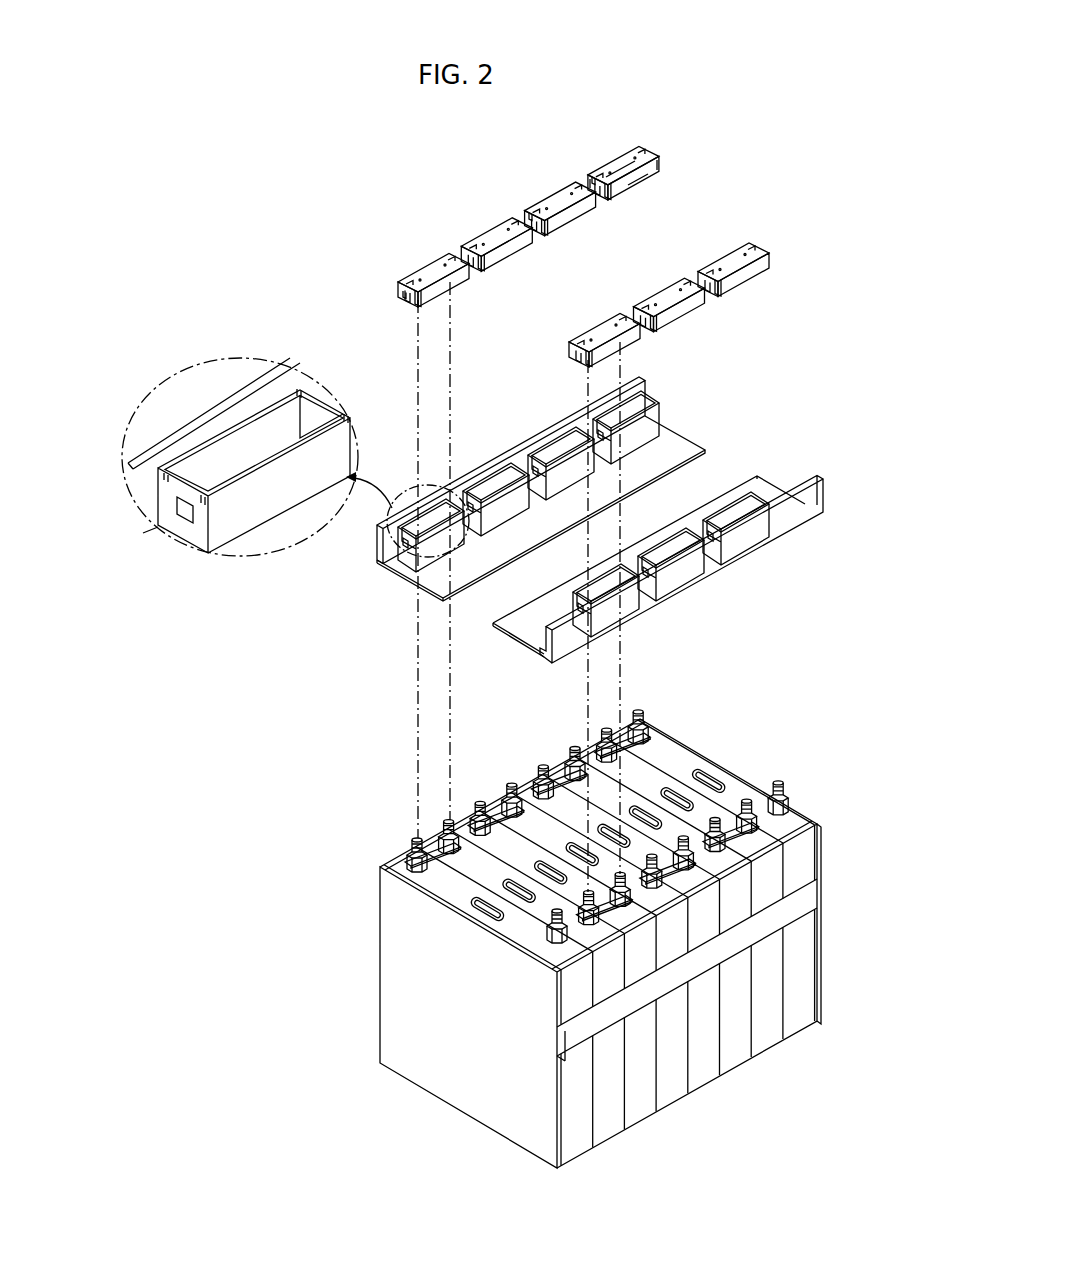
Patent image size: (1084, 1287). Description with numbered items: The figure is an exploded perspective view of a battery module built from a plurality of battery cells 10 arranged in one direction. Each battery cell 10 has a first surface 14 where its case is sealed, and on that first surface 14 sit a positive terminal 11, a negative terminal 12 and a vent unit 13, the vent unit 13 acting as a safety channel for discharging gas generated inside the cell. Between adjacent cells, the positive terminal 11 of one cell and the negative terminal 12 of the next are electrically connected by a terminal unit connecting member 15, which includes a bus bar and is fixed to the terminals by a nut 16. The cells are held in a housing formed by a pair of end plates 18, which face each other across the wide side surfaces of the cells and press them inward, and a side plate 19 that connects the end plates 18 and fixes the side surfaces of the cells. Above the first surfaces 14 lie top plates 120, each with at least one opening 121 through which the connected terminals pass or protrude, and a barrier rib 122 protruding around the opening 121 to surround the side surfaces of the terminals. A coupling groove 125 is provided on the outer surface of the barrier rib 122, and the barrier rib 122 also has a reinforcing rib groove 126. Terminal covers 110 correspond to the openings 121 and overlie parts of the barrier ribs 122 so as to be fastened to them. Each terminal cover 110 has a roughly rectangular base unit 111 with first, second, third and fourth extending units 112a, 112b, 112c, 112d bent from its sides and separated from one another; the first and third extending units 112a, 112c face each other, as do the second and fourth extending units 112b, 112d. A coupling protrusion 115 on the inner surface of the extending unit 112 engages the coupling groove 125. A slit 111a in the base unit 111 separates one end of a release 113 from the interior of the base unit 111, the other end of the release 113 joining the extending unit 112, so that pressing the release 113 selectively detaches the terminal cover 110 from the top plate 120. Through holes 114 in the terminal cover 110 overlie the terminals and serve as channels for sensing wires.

The battery cell 10 is at (772, 1000).
The positive terminal 11 is at (640, 706).
The negative terminal 12 is at (782, 800).
The vent unit 13 is at (706, 776).
The first surface 14 is at (748, 790).
The terminal unit connecting member 15 is at (414, 838).
The nut 16 is at (533, 773).
The end plate 18 is at (826, 969).
The side plate 19 is at (817, 896).
The terminal cover 110 is at (387, 262).
The base unit 111 is at (613, 168).
The slit 111a is at (590, 175).
The extending unit 112 is at (757, 155).
The first extending unit 112a is at (604, 203).
The second extending unit 112b is at (623, 183).
The third extending unit 112c is at (661, 161).
The fourth extending unit 112d is at (620, 157).
The release 113 is at (478, 247).
The through hole 114 is at (419, 280).
The coupling protrusion 115 is at (402, 302).
The top plate 120 is at (709, 435).
The opening 121 is at (644, 383).
The barrier rib 122 is at (646, 418).
The coupling groove 125 is at (184, 516).
The reinforcing rib groove 126 is at (298, 391).